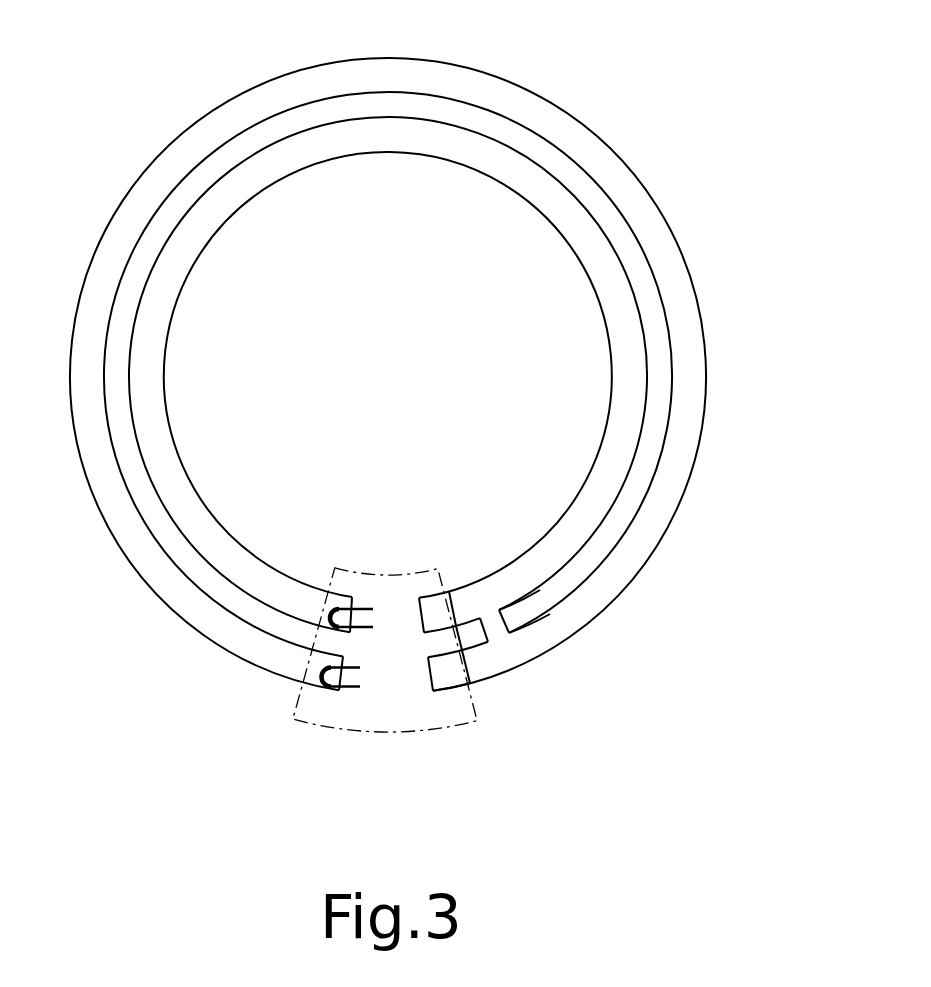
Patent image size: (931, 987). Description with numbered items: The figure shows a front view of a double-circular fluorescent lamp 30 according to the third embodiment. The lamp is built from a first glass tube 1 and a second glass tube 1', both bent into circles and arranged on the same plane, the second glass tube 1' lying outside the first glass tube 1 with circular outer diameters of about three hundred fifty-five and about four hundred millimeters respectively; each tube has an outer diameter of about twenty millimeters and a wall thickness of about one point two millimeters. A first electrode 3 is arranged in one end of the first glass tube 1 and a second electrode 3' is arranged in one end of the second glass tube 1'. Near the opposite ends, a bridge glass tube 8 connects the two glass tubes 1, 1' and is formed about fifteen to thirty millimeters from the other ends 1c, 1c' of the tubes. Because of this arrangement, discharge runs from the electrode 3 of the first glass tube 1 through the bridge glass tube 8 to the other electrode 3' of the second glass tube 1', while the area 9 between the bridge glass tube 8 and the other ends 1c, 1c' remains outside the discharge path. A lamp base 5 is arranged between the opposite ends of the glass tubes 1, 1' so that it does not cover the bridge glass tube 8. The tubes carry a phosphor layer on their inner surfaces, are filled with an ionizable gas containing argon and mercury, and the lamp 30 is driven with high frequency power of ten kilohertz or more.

The double-circular fluorescent lamp 30 is at (686, 53).
The first glass tube 1 is at (452, 374).
The second glass tube 1' is at (442, 374).
The other end of first glass tube 1c is at (406, 571).
The other end of second glass tube 1c' is at (419, 727).
The first electrode 3 is at (322, 563).
The second electrode 3' is at (285, 700).
The lamp base 5 is at (350, 687).
The bridge glass tube 8 is at (600, 647).
The area 9 is at (494, 688).